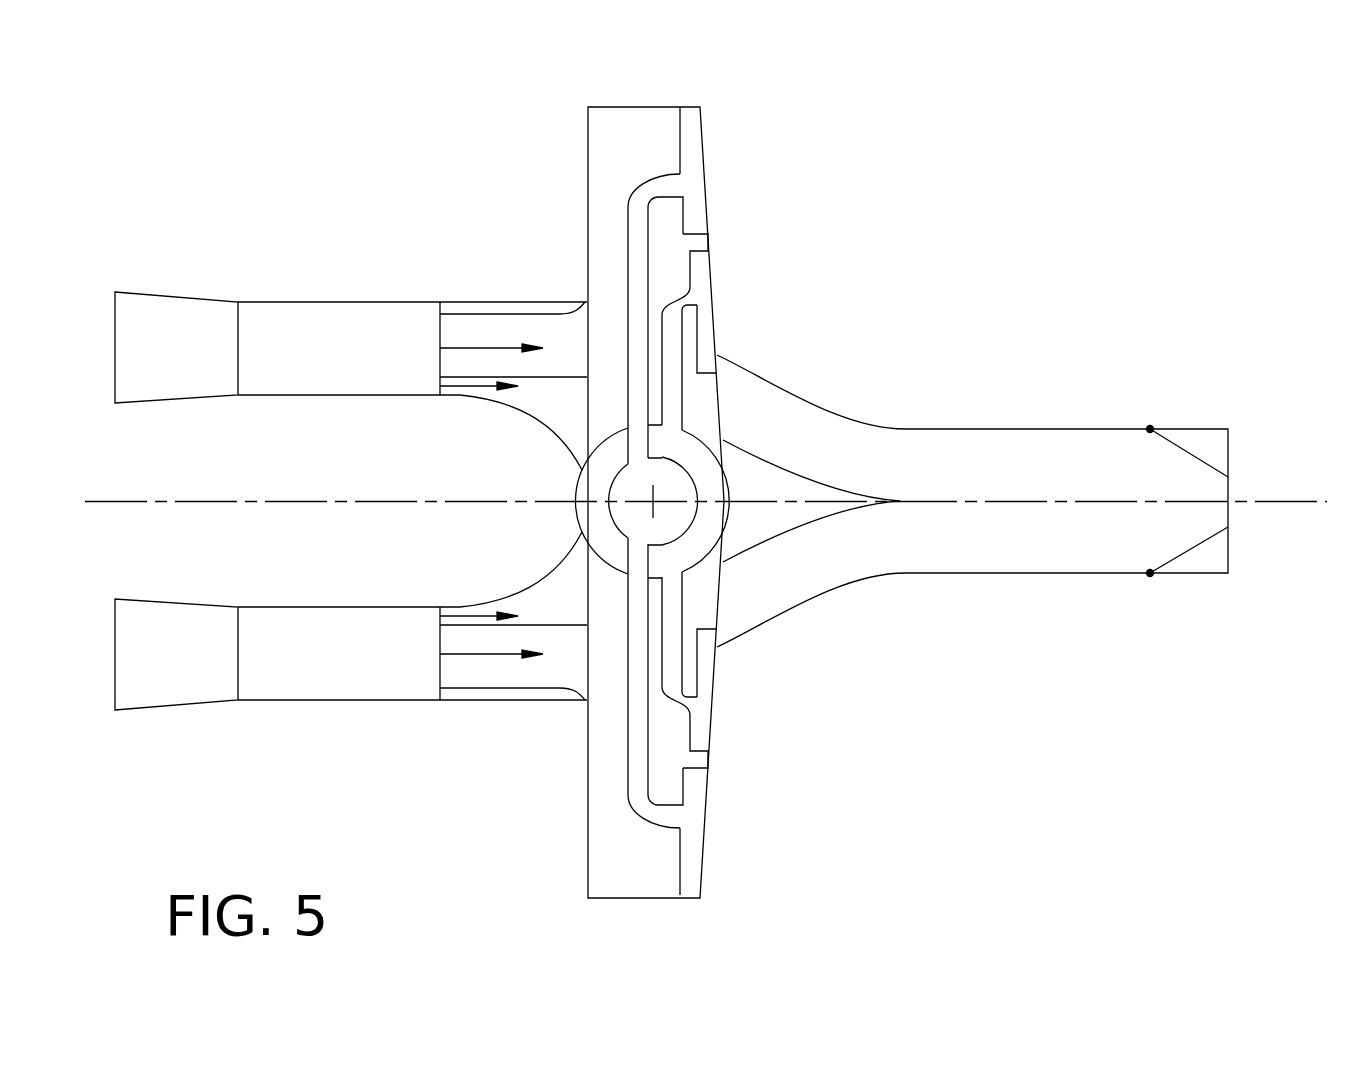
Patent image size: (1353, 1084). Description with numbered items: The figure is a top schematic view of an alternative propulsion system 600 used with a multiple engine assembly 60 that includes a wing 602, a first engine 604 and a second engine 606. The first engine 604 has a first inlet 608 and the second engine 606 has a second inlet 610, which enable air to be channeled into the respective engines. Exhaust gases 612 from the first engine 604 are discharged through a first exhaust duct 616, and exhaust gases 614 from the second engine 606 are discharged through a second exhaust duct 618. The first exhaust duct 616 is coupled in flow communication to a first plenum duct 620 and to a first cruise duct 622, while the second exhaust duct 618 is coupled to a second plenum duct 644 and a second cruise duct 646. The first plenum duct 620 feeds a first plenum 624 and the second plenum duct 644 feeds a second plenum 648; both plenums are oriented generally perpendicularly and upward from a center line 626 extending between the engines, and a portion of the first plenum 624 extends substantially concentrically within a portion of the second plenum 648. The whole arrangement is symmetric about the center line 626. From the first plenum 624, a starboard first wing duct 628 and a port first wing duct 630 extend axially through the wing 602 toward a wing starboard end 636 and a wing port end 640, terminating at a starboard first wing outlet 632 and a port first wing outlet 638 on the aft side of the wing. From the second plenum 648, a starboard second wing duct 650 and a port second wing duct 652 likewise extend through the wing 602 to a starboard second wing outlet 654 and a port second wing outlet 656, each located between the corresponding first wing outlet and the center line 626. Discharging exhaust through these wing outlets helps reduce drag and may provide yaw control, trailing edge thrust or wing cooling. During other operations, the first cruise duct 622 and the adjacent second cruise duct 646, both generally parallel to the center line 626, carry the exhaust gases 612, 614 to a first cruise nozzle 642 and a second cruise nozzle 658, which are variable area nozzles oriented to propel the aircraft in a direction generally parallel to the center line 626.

The multiple engine assembly 60 is at (166, 116).
The propulsion system 600 is at (480, 144).
The wing 602 is at (612, 797).
The first engine 604 is at (357, 308).
The second engine 606 is at (357, 612).
The first inlet 608 is at (115, 378).
The second inlet 610 is at (115, 624).
The exhaust gases 612 is at (463, 387).
The exhaust gases 614 is at (463, 615).
The first exhaust duct 616 is at (748, 388).
The second exhaust duct 618 is at (748, 616).
The first plenum duct 620 is at (557, 407).
The first cruise duct 622 is at (1033, 452).
The first plenum 624 is at (627, 488).
The center line 626 is at (343, 498).
The starboard first wing duct 628 is at (640, 230).
The port first wing duct 630 is at (640, 743).
The starboard first wing outlet 632 is at (695, 152).
The wing starboard end 636 is at (655, 147).
The port first wing outlet 638 is at (695, 851).
The wing port end 640 is at (655, 891).
The first cruise nozzle 642 is at (1190, 450).
The second plenum duct 644 is at (562, 590).
The second cruise duct 646 is at (1030, 555).
The second plenum 648 is at (588, 516).
The starboard second wing duct 650 is at (672, 340).
The port second wing duct 652 is at (672, 664).
The starboard second wing outlet 654 is at (703, 281).
The port second wing outlet 656 is at (703, 722).
The second cruise nozzle 658 is at (1190, 552).